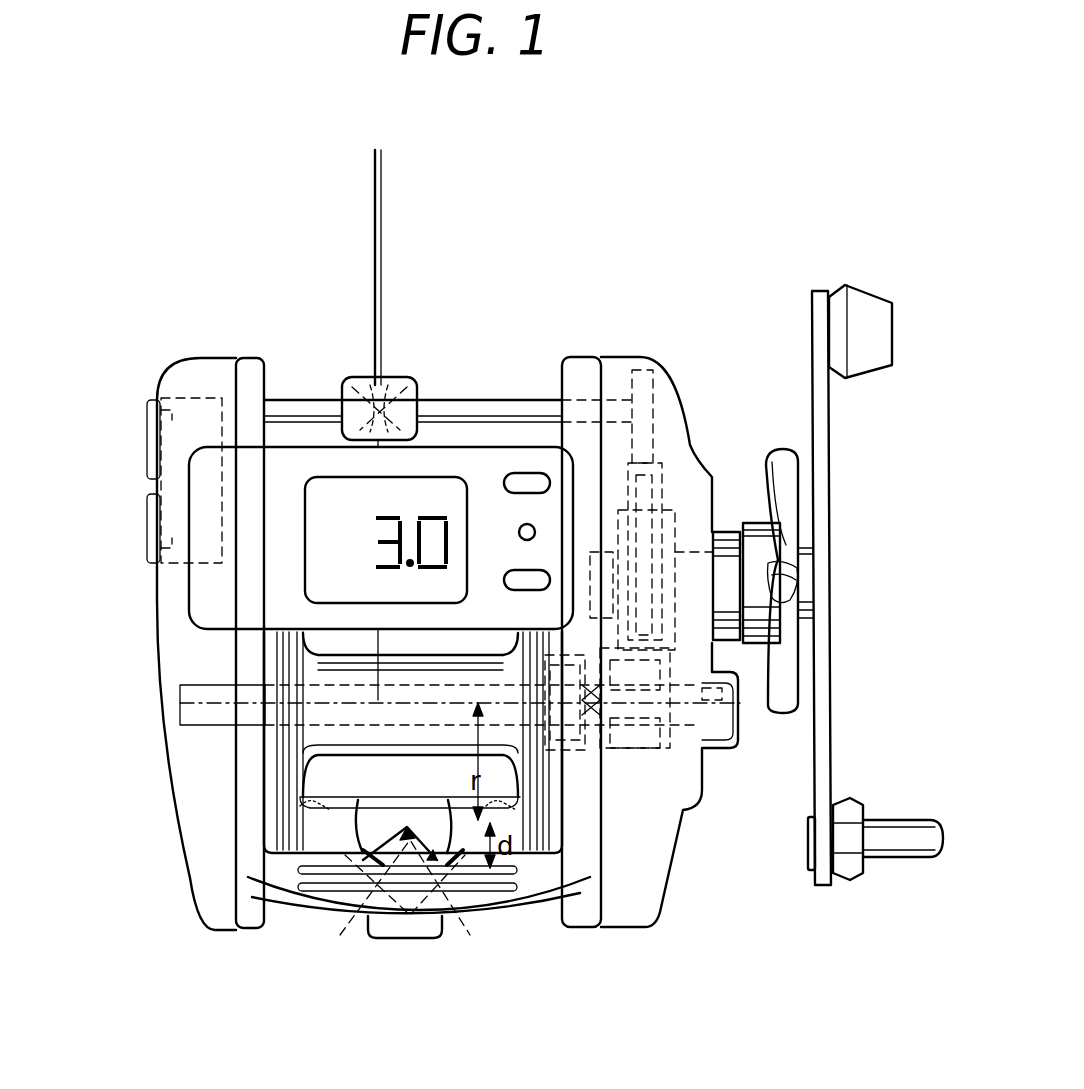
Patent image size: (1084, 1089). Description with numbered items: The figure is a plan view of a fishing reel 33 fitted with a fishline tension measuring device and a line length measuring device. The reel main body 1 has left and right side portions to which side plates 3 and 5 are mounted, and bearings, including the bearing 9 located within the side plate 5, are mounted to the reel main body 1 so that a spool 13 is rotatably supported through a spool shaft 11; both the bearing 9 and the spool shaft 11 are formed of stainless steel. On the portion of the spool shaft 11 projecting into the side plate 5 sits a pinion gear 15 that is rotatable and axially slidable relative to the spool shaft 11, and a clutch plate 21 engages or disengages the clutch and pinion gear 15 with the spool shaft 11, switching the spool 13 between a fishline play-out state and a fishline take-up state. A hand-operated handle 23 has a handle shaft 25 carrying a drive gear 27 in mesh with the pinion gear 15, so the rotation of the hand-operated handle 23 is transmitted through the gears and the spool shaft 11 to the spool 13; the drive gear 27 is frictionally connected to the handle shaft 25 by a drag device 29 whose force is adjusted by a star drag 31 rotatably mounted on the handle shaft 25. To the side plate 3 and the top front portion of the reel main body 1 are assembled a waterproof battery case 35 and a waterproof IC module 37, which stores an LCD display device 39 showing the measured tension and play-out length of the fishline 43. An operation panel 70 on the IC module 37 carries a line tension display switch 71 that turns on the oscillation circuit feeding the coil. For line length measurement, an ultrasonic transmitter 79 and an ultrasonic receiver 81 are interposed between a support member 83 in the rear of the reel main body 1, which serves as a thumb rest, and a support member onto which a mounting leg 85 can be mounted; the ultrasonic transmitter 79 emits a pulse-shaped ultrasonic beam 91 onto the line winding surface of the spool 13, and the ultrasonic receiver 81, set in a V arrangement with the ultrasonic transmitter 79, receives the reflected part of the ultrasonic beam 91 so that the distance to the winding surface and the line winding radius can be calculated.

The reel main body 1 is at (577, 357).
The side plate 3 is at (148, 629).
The side plate 5 is at (670, 402).
The bearing 9 is at (578, 748).
The spool shaft 11 is at (184, 713).
The spool 13 is at (290, 745).
The pinion gear 15 is at (700, 770).
The clutch plate 21 is at (692, 660).
The hand-operated handle 23 is at (828, 415).
The handle shaft 25 is at (805, 528).
The drive gear 27 is at (655, 483).
The drag device 29 is at (263, 808).
The star drag 31 is at (788, 668).
The fishing reel 33 is at (660, 337).
The battery case 35 is at (162, 420).
The IC module 37 is at (201, 463).
The LCD display device 39 is at (322, 530).
The fishline 43 is at (375, 226).
The operation panel 70 is at (381, 479).
The line tension display switch 71 is at (520, 483).
The ultrasonic transmitter 79 is at (370, 893).
The ultrasonic receiver 81 is at (453, 893).
The support member 83 is at (407, 900).
The mounting leg 85 is at (425, 928).
The ultrasonic beam 91 is at (400, 830).